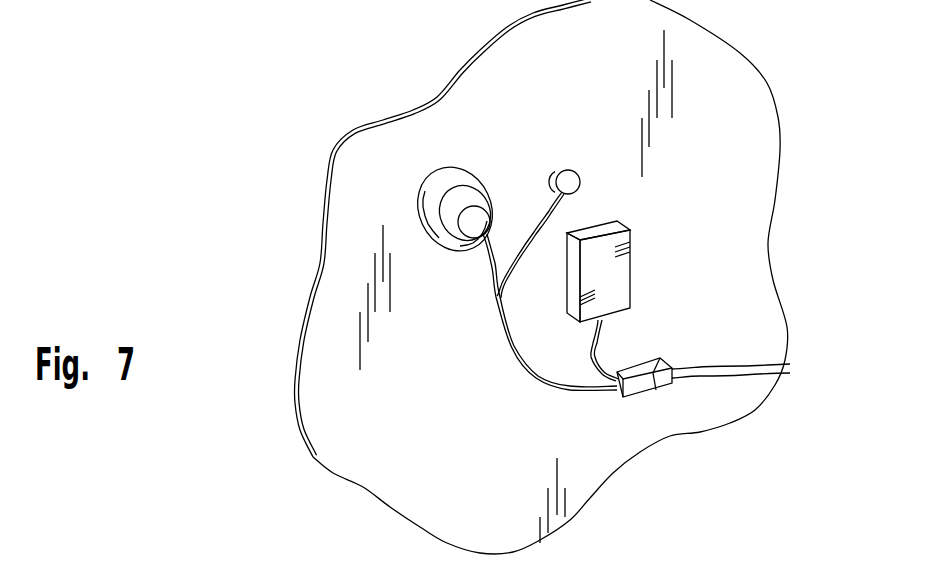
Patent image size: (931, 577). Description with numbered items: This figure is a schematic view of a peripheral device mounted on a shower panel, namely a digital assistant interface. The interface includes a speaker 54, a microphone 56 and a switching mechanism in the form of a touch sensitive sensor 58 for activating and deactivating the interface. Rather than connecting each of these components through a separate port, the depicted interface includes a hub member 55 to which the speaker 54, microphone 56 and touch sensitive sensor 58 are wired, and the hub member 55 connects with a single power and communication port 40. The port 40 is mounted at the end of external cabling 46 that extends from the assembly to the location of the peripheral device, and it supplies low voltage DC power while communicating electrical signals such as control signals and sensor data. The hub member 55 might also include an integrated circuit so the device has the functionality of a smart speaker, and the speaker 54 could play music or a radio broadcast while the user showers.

The power and communication port 40 is at (667, 383).
The external cabling 46 is at (742, 368).
The speaker 54 is at (430, 195).
The hub member 55 is at (638, 390).
The microphone 56 is at (563, 167).
The touch sensitive sensor 58 is at (612, 272).